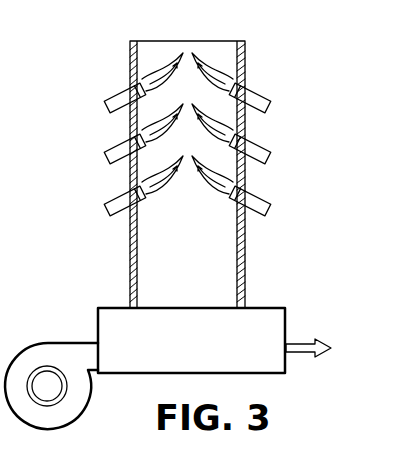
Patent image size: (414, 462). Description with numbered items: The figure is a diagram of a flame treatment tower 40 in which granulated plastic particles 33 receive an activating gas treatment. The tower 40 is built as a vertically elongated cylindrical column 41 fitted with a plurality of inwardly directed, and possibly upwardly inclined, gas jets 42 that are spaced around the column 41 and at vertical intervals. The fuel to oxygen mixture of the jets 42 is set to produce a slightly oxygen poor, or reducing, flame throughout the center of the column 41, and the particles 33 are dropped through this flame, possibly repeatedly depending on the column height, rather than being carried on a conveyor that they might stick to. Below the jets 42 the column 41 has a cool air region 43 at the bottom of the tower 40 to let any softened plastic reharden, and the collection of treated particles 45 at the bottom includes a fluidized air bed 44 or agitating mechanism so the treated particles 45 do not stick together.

The granulated plastic particles 33 is at (175, 42).
The flame treatment tower 40 is at (53, 207).
The cylindrical column 41 is at (245, 266).
The gas jets 42 is at (99, 116).
The cool air region 43 is at (118, 225).
The fluidized air bed 44 is at (184, 355).
The treated particles 45 is at (304, 344).